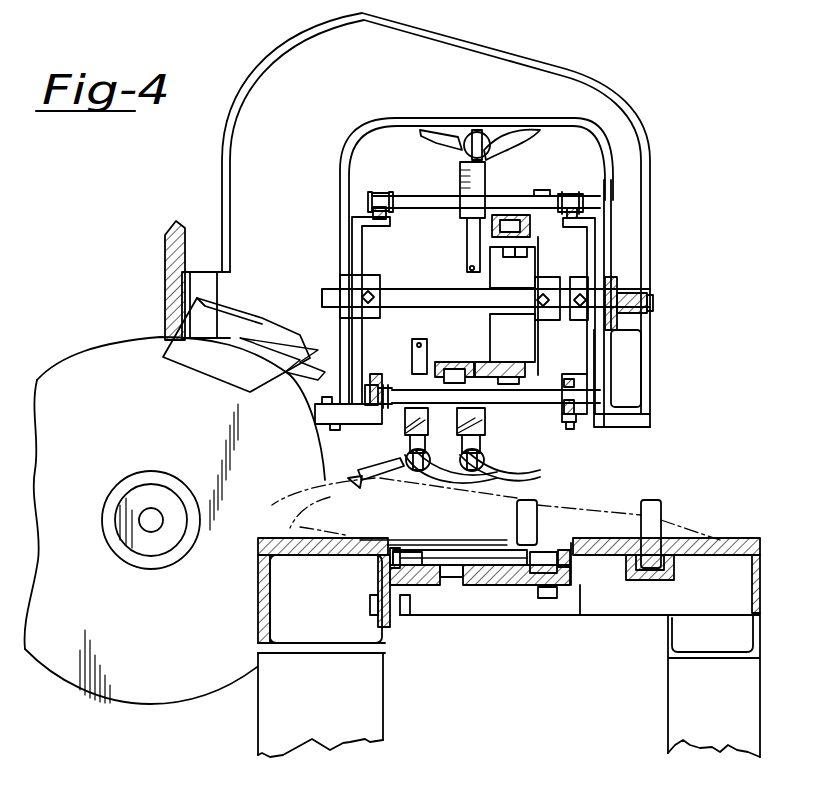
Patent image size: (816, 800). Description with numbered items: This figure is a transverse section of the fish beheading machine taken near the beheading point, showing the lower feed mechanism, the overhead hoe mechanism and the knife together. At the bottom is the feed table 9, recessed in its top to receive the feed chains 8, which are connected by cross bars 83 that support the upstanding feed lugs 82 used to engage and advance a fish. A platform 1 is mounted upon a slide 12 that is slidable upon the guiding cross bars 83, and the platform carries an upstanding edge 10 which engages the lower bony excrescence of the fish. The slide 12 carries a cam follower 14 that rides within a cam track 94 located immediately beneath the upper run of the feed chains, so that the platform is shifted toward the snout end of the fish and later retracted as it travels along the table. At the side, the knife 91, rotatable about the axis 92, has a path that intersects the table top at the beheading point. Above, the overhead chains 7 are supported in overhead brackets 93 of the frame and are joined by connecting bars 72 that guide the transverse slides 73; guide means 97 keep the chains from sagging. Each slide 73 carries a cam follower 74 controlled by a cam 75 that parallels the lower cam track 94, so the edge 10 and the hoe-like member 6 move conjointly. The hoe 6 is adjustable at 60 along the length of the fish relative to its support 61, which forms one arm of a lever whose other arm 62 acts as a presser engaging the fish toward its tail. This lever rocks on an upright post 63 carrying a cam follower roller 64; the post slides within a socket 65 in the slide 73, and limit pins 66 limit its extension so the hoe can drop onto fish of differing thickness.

The platform 1 is at (445, 545).
The hoe-like member 6 is at (450, 132).
The chains 7 is at (582, 194).
The feed chains 8 is at (562, 582).
The feed table 9 is at (714, 540).
The upstanding edge 10 is at (362, 535).
The slide 12 is at (428, 587).
The cam follower 14 is at (462, 590).
The adjustment 60 is at (405, 458).
The support 61 is at (400, 460).
The arm 62 is at (530, 135).
The upright post 63 is at (466, 256).
The cam follower roller 64 is at (480, 135).
The socket 65 is at (487, 180).
The limit pins 66 is at (467, 270).
The connecting bars 72 is at (412, 196).
The transverse slides 73 is at (541, 190).
The cam follower 74 is at (492, 226).
The cam 75 is at (535, 236).
The feed lugs 82 is at (641, 505).
The cross bars 83 is at (528, 590).
The knife 91 is at (248, 326).
The axis 92 is at (140, 518).
The overhead brackets 93 is at (300, 48).
The cam track 94 is at (448, 590).
The guide means 97 is at (350, 215).